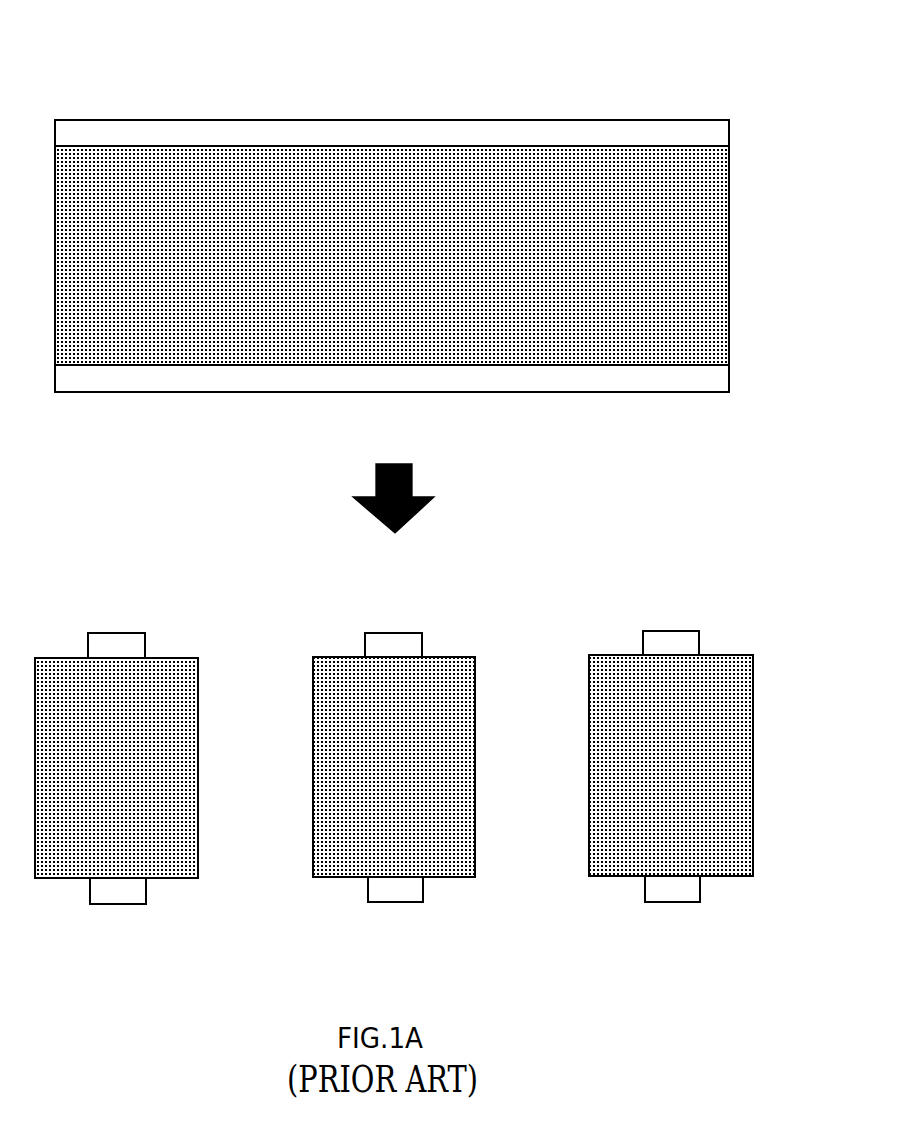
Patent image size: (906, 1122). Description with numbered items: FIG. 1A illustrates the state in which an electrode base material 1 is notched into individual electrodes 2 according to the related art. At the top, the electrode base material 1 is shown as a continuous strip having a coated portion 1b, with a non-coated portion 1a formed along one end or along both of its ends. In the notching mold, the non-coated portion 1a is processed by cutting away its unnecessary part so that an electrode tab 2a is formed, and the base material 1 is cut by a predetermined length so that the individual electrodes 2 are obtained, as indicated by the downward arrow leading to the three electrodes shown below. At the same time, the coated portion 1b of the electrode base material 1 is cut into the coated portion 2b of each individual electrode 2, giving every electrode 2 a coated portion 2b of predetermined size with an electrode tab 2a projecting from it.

The electrode base material 1 is at (577, 81).
The non-coated portion 1a is at (712, 133).
The coated portion 1b is at (713, 260).
The individual electrode 2 is at (394, 718).
The electrode tab 2a is at (114, 647).
The coated portion 2b is at (185, 762).